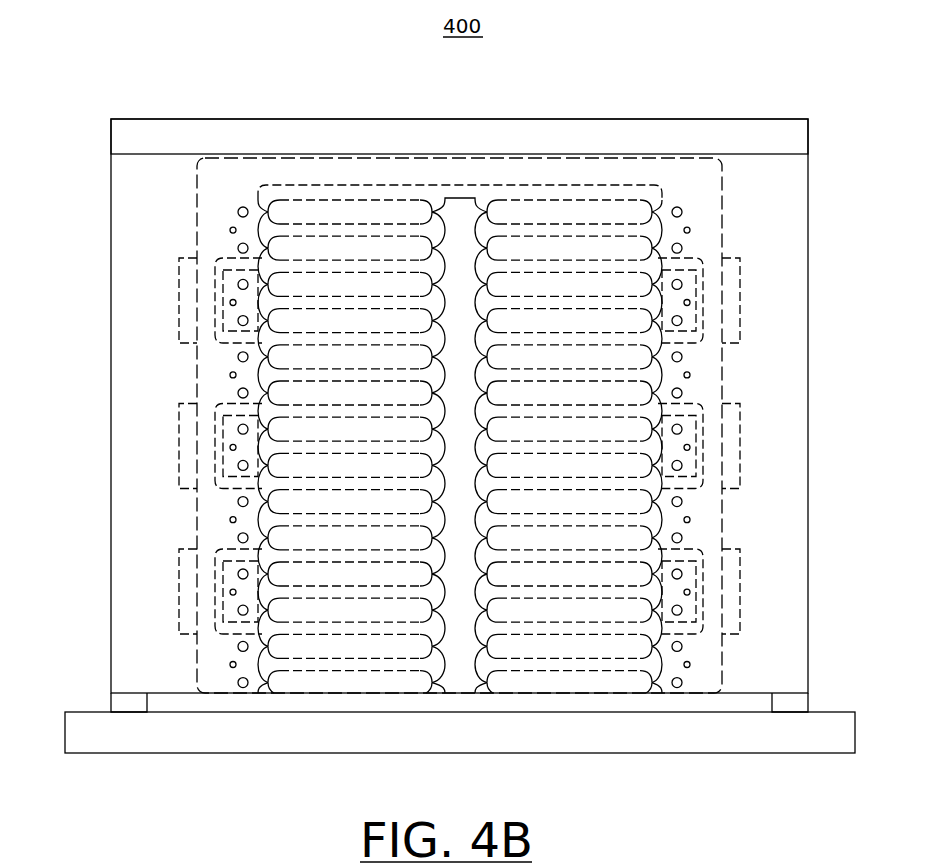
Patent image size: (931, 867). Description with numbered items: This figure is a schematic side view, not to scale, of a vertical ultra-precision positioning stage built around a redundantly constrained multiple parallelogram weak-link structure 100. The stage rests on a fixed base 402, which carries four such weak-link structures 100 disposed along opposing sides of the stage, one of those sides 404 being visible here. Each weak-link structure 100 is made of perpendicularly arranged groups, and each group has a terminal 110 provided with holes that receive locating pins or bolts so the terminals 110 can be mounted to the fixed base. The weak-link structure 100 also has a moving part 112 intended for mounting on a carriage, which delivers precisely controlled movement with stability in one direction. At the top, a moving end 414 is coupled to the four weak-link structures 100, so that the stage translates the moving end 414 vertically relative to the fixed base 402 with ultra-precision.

The redundantly constrained weak-link structure 100 is at (705, 225).
The terminal 110 is at (230, 290).
The moving part 112 is at (590, 175).
The fixed base 402 is at (268, 727).
The side 404 is at (782, 662).
The moving end 414 is at (178, 135).